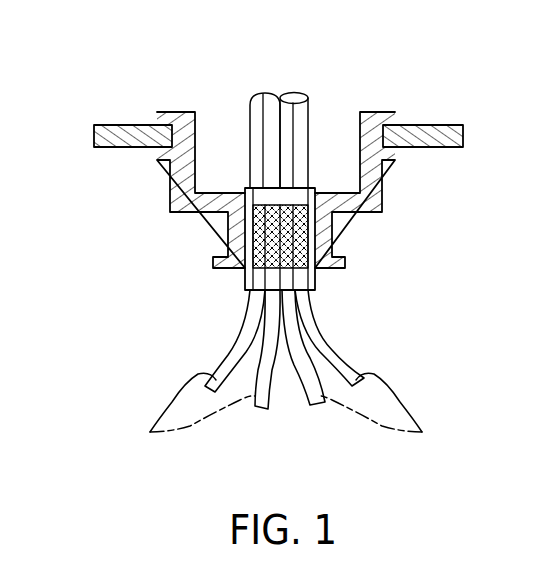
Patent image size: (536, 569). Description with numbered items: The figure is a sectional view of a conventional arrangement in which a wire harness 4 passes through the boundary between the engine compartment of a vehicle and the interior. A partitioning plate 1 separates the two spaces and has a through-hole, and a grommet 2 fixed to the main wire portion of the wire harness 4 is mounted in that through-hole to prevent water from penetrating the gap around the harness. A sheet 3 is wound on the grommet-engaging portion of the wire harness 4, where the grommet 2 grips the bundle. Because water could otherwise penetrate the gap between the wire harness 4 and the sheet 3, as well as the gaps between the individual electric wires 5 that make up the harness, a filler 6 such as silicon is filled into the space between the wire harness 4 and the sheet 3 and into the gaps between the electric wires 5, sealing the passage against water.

The partitioning plate 1 is at (128, 125).
The grommet 2 is at (168, 184).
The sheet 3 is at (240, 273).
The wire harness 4 is at (248, 54).
The electric wires 5 is at (286, 410).
The filler 6 is at (310, 240).